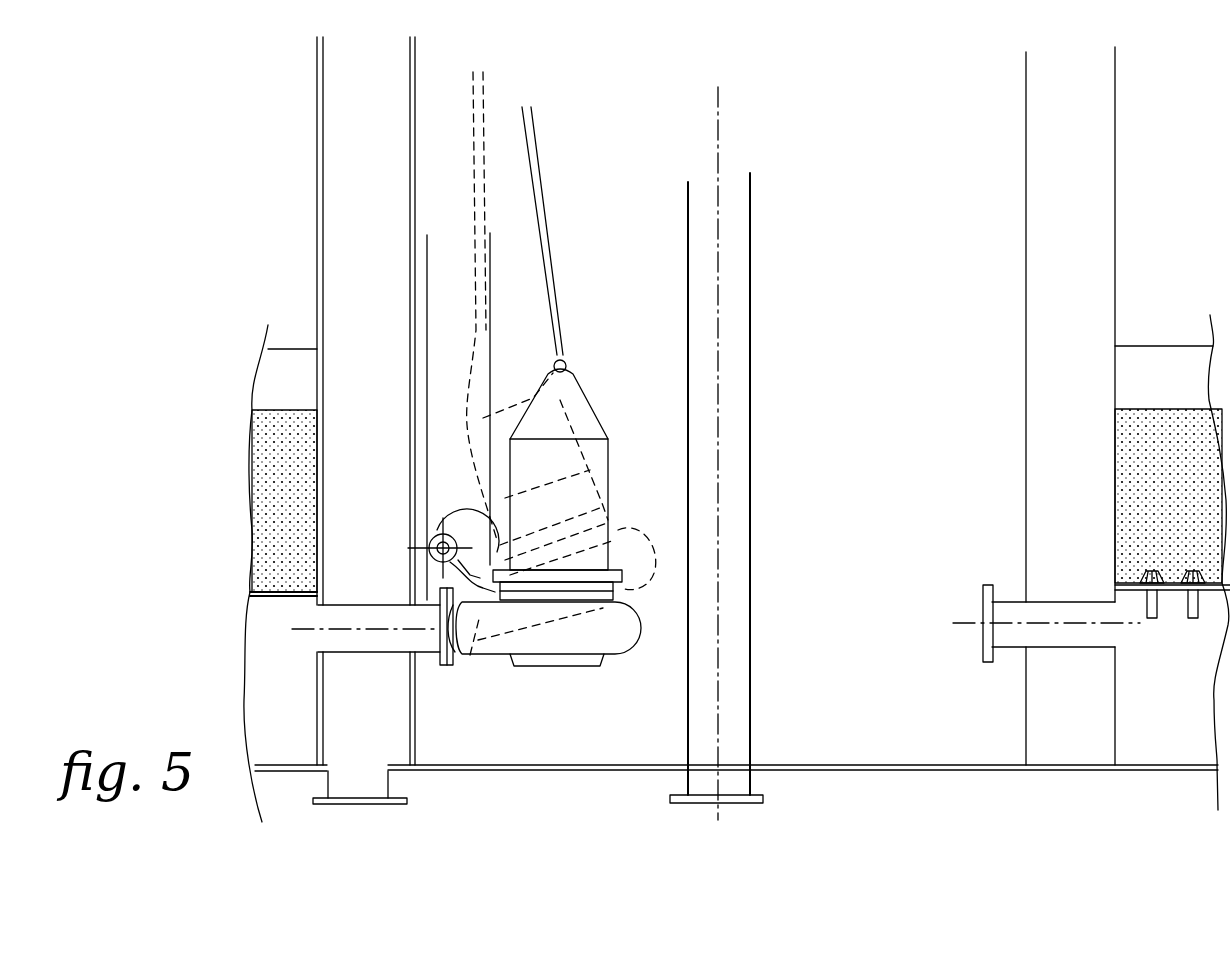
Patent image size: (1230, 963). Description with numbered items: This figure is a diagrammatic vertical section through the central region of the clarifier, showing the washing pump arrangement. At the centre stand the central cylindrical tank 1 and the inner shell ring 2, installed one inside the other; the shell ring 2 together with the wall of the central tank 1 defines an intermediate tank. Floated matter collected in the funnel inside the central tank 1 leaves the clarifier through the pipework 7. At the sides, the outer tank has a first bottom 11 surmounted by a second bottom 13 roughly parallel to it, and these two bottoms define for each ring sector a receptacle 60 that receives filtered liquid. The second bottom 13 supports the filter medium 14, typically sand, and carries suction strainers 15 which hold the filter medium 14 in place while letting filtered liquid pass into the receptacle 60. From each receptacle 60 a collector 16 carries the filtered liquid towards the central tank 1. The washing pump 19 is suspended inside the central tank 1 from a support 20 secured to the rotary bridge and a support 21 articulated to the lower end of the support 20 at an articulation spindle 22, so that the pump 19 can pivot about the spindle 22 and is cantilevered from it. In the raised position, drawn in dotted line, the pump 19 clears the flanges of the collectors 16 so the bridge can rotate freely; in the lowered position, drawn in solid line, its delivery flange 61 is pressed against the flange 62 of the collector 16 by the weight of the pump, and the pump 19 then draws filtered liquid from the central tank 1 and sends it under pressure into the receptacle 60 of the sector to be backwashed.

The central cylindrical tank 1 is at (1025, 195).
The inner shell ring 2 is at (1115, 267).
The pipework 7 is at (740, 287).
The first bottom 11 is at (848, 765).
The second bottom 13 is at (285, 612).
The filter medium 14 is at (300, 468).
The suction strainers 15 is at (1152, 618).
The collector 16 is at (368, 640).
The washing pump 19 is at (565, 648).
The support 20 is at (446, 368).
The articulated support 21 is at (468, 583).
The articulation spindle 22 is at (432, 540).
The receptacle 60 is at (290, 748).
The delivery flange 61 is at (458, 652).
The collector flange 62 is at (437, 652).